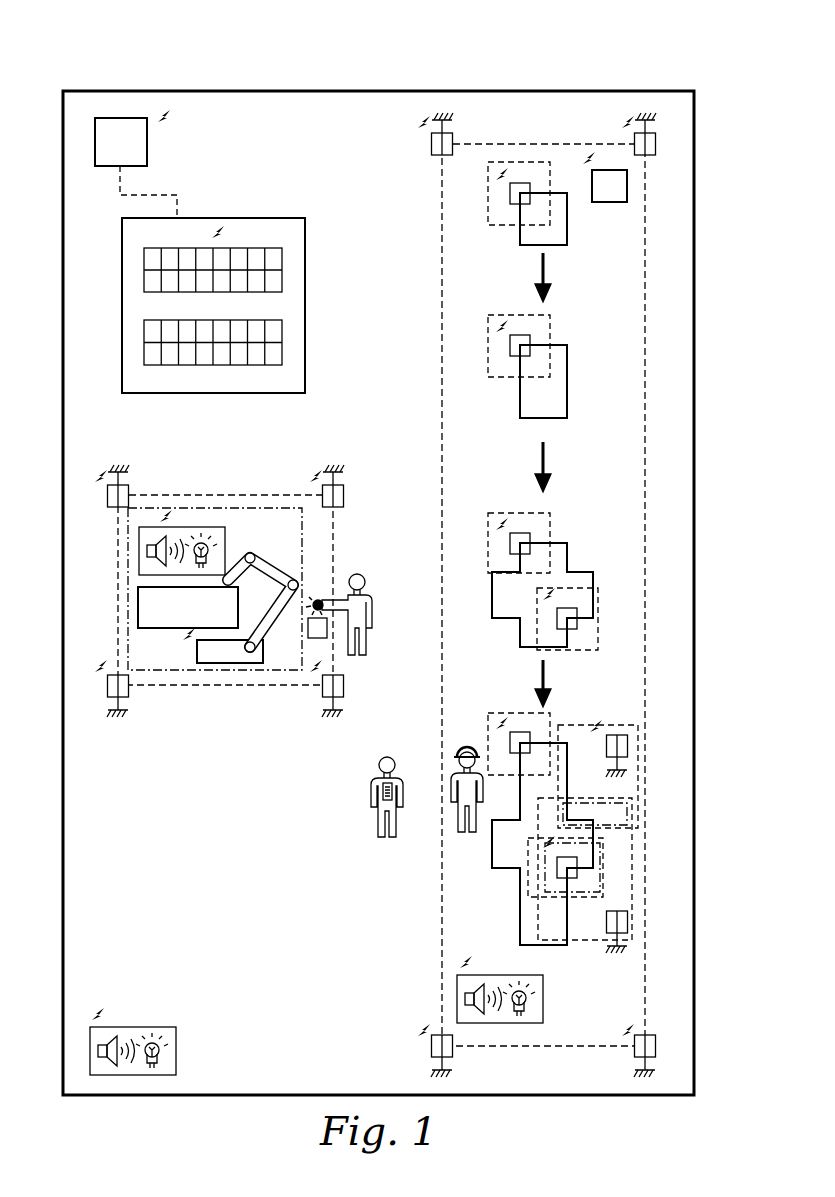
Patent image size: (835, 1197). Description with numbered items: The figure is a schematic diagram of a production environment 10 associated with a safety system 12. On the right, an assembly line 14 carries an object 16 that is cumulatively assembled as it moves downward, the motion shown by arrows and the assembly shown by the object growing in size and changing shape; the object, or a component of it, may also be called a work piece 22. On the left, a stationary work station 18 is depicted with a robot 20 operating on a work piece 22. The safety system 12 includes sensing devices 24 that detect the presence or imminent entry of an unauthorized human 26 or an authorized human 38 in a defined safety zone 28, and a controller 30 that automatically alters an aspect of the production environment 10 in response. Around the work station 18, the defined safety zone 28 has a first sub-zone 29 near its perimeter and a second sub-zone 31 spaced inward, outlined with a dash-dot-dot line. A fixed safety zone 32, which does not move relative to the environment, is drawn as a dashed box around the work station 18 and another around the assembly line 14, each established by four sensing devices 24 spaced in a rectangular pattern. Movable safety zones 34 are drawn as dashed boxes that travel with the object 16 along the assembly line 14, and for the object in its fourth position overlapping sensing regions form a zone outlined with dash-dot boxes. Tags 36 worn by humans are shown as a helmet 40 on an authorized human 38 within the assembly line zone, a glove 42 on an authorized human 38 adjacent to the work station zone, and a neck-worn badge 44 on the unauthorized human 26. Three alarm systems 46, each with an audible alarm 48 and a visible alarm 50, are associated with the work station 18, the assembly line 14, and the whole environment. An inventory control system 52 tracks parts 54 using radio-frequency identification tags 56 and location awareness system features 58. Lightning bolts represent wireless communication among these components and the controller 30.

The production environment 10 is at (725, 50).
The safety system 12 is at (660, 62).
The assembly line 14 is at (381, 562).
The object 16 is at (520, 243).
The work station 18 is at (207, 586).
The robot 20 is at (268, 575).
The work piece 22 is at (138, 600).
The sensing device 24 is at (432, 150).
The unauthorized human 26 is at (361, 791).
The defined safety zone 28 is at (487, 196).
The first sub-zone 29 is at (275, 495).
The controller 30 is at (147, 143).
The second sub-zone 31 is at (170, 660).
The fixed safety zone 32 is at (440, 348).
The movable safety zone 34 is at (488, 170).
The tag 36 is at (322, 590).
The authorized human 38 is at (394, 703).
The helmet 40 is at (460, 752).
The glove 42 is at (330, 598).
The neck-worn badge 44 is at (382, 794).
The alarm system 46 is at (332, 774).
The audible alarm 48 is at (466, 1002).
The visible alarm 50 is at (533, 1005).
The inventory control system 52 is at (208, 281).
The parts 54 is at (208, 281).
The radio-frequency identification tag 56 is at (208, 306).
The location awareness system feature 58 is at (146, 353).